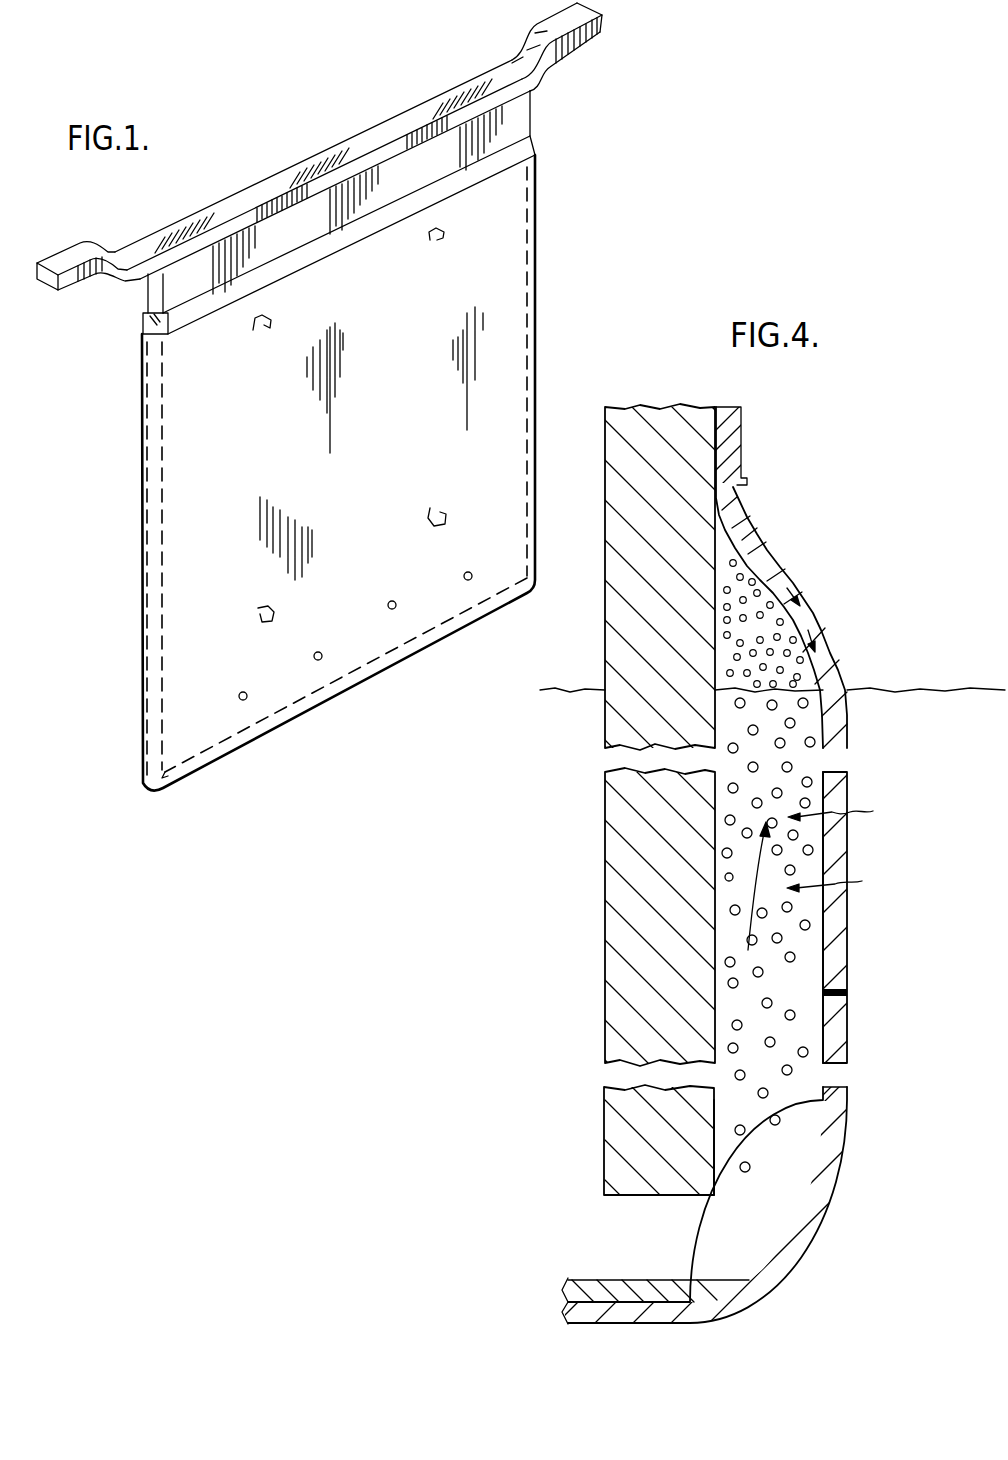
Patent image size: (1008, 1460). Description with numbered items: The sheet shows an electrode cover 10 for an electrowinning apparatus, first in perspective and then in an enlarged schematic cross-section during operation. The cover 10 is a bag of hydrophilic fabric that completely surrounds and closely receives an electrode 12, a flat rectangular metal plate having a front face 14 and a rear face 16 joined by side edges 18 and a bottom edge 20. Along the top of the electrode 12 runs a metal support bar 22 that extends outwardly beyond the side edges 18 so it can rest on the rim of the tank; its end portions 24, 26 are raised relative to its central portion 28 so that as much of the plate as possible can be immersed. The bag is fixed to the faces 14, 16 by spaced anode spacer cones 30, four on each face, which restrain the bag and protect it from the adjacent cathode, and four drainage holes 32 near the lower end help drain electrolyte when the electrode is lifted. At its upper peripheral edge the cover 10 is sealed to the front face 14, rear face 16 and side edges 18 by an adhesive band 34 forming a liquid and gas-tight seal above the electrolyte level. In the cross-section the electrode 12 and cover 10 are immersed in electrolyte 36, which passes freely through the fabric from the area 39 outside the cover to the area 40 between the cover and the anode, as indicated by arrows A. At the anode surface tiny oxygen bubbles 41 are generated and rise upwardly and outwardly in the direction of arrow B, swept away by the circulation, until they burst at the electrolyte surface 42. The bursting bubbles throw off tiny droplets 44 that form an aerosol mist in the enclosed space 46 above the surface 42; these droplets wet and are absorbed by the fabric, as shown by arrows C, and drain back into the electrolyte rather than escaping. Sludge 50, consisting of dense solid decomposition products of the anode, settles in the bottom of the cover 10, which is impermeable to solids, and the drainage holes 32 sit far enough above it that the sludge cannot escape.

In FIG. 1, the electrode cover 10 is at (565, 262).
In FIG. 4, the electrode cover 10 is at (779, 864).
In FIG. 1, the electrode 12 is at (319, 145).
In FIG. 4, the electrode 12 is at (603, 713).
In FIG. 1, the front face 14 is at (428, 618).
In FIG. 4, the front face 14 is at (717, 1187).
In FIG. 4, the rear face 16 is at (603, 999).
In FIG. 1, the side edges 18 is at (153, 523).
In FIG. 1, the bottom edge 20 is at (303, 697).
In FIG. 4, the bottom edge 20 is at (682, 1170).
In FIG. 1, the support bar 22 is at (245, 187).
In FIG. 1, the end portion 24 is at (60, 250).
In FIG. 1, the end portion 26 is at (543, 17).
In FIG. 1, the central portion 28 is at (350, 138).
In FIG. 1, the anode spacer cones 30 is at (434, 242).
In FIG. 1, the drainage holes 32 is at (470, 572).
In FIG. 4, the drainage holes 32 is at (850, 1005).
In FIG. 1, the adhesive band 34 is at (533, 140).
In FIG. 4, the adhesive band 34 is at (742, 440).
In FIG. 4, the electrolyte 36 is at (922, 802).
In FIG. 4, the area outside cover 39 is at (895, 1050).
In FIG. 4, the area enclosed by cover 40 is at (807, 870).
In FIG. 4, the bubbles 41 is at (778, 1126).
In FIG. 4, the electrolyte surface 42 is at (897, 690).
In FIG. 4, the droplets 44 is at (757, 530).
In FIG. 4, the space above electrolyte surface 46 is at (743, 517).
In FIG. 4, the sludge 50 is at (663, 1280).
In FIG. 4, the arrows indicating electrolyte movement A is at (839, 846).
In FIG. 4, the arrow indicating bubble direction B is at (753, 886).
In FIG. 4, the arrows indicating droplet absorption C is at (777, 570).